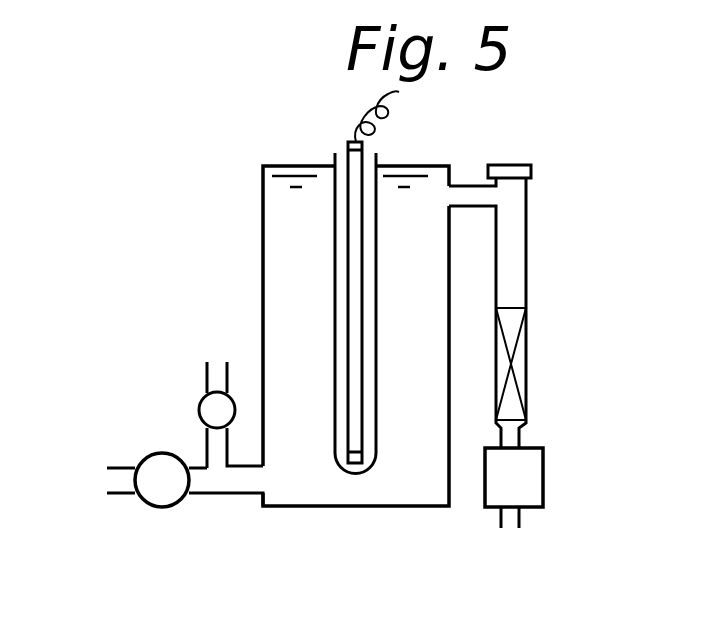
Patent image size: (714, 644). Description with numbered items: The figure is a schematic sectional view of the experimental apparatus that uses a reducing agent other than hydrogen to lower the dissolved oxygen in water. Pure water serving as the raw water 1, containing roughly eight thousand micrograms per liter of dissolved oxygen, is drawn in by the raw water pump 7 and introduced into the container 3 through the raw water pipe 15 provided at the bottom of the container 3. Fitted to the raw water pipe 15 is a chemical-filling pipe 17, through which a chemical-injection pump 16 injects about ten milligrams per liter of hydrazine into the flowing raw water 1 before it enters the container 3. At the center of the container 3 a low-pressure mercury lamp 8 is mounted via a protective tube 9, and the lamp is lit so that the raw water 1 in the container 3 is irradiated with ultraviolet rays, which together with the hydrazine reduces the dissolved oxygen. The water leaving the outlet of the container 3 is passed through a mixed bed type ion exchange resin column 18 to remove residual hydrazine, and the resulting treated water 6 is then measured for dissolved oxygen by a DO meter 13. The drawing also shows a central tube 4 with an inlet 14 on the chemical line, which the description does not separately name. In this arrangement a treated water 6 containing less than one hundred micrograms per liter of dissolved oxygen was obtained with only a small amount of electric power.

The raw water 1 is at (121, 480).
The container 3 is at (357, 507).
The electrode tube 4 is at (338, 144).
The treated water 6 is at (510, 532).
The raw water pump 7 is at (162, 508).
The low-pressure mercury lamp 8 is at (364, 148).
The protective tube 9 is at (377, 350).
The DO meter 13 is at (544, 487).
The reagent inlet pipe 14 is at (215, 379).
The raw water pipe 15 is at (222, 494).
The chemical-injection pump 16 is at (200, 398).
The chemical-filling pipe 17 is at (205, 445).
The mixed bed type ion exchange resin column 18 is at (527, 322).